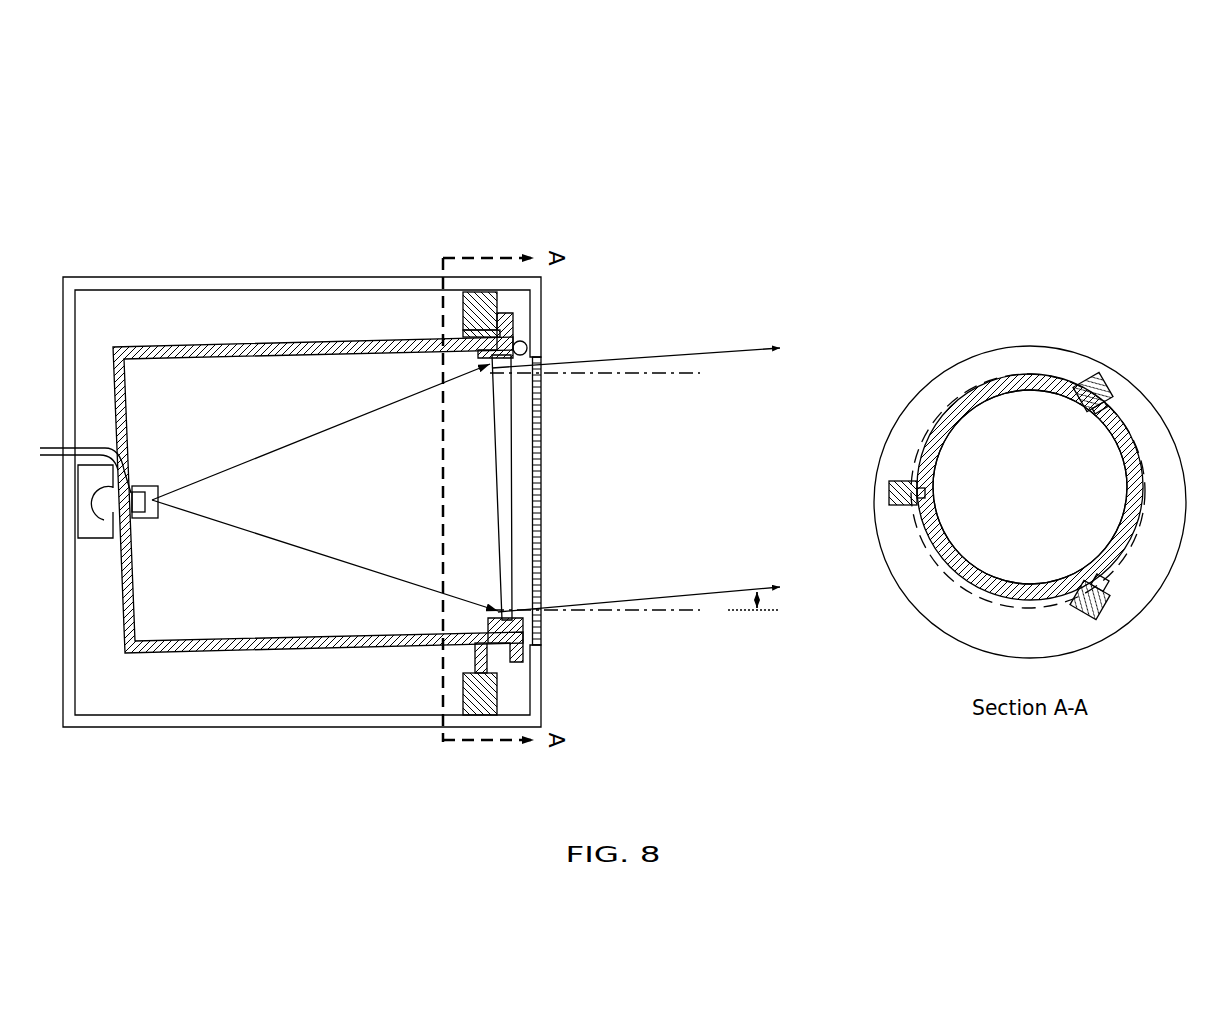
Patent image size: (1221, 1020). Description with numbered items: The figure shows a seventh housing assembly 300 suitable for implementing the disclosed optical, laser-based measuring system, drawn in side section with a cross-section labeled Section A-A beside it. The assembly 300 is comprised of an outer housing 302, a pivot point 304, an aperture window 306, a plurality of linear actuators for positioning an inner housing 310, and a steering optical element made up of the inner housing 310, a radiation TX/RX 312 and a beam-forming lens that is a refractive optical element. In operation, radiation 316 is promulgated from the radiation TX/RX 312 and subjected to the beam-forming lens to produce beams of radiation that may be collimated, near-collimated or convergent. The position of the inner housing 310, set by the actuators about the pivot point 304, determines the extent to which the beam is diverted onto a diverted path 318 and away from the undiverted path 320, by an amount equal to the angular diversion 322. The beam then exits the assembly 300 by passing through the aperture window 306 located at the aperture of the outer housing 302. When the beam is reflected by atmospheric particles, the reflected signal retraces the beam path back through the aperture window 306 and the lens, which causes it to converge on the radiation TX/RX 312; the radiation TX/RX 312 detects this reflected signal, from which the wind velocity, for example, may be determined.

The housing assembly 300 is at (164, 189).
The outer housing 302 is at (281, 277).
The pivot point 304 is at (108, 519).
The aperture window 306 is at (543, 410).
The inner housing 310 is at (280, 343).
The radiation TX/RX 312 is at (170, 470).
The radiation 316 is at (282, 540).
The diverted path 318 is at (746, 348).
The undiverted path 320 is at (618, 368).
The angular diversion 322 is at (756, 631).